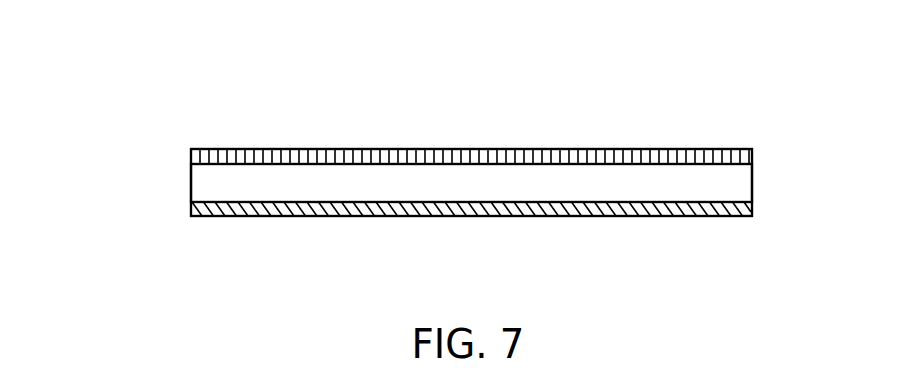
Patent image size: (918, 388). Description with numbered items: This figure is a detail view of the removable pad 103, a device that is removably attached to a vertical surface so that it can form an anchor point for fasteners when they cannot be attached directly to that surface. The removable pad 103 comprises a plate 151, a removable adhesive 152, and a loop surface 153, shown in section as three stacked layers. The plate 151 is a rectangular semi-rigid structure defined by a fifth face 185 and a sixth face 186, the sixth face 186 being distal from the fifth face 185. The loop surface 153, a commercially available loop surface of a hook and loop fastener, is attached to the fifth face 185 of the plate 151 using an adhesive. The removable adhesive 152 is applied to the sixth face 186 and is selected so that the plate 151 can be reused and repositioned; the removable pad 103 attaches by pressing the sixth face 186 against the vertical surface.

The removable pad 103 is at (208, 124).
The loop surface 153 is at (505, 156).
The removable adhesive 152 is at (589, 208).
The plate 151 is at (667, 177).
The fifth face 185 is at (215, 164).
The sixth face 186 is at (713, 203).